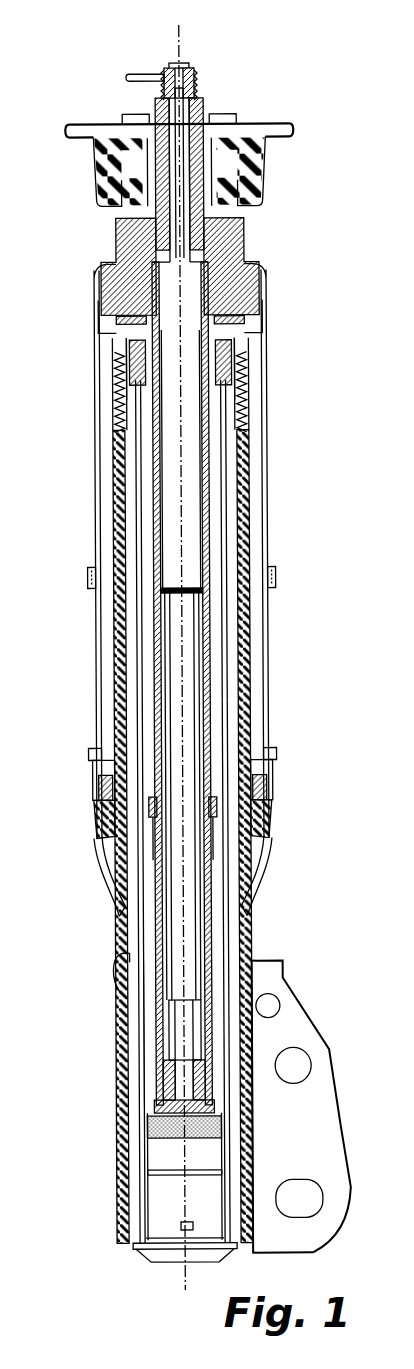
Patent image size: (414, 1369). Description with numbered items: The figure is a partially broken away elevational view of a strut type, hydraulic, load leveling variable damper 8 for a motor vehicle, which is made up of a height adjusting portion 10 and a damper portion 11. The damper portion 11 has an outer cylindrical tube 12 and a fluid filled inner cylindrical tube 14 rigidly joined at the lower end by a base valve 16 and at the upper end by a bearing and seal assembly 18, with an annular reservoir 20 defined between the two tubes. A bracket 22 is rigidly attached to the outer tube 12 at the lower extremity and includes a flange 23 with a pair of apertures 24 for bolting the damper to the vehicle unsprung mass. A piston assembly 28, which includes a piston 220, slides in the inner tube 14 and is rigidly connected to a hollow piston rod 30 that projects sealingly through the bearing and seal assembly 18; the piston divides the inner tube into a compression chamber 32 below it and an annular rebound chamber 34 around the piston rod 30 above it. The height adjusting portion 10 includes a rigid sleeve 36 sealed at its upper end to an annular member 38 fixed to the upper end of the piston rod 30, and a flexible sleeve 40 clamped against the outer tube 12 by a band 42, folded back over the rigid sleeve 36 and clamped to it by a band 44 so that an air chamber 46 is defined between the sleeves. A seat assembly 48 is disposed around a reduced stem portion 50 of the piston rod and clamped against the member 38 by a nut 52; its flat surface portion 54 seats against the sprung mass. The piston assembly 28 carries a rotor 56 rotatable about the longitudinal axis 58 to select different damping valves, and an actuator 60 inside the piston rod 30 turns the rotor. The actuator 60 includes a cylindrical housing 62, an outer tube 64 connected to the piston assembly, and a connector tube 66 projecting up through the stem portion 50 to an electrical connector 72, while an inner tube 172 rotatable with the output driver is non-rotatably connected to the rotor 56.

The variable damper 8 is at (87, 525).
The height adjusting portion 10 is at (276, 444).
The damper portion 11 is at (108, 912).
The outer cylindrical tube 12 is at (256, 912).
The inner cylindrical tube 14 is at (233, 951).
The base valve 16 is at (168, 1258).
The bearing and seal assembly 18 is at (140, 372).
The annular reservoir 20 is at (140, 1066).
The bracket 22 is at (331, 1097).
The flange 23 is at (305, 1158).
The apertures 24 is at (297, 1052).
The piston assembly 28 is at (150, 1155).
The hollow piston rod 30 is at (157, 640).
The compression chamber 32 is at (163, 1201).
The annular rebound chamber 34 is at (148, 982).
The rigid sleeve 36 is at (272, 525).
The annular member 38 is at (222, 226).
The flexible sleeve 40 is at (102, 842).
The band 42 is at (242, 434).
The band 44 is at (100, 790).
The air chamber 46 is at (258, 616).
The seat assembly 48 is at (284, 118).
The reduced stem portion 50 is at (206, 145).
The nut 52 is at (198, 106).
The flat surface portion 54 is at (97, 125).
The rotor 56 is at (177, 1094).
The longitudinal axis 58 is at (183, 663).
The actuator 60 is at (156, 413).
The cylindrical housing 62 is at (172, 453).
The outer tube 64 is at (177, 947).
The connector tube 66 is at (172, 203).
The electrical connector 72 is at (183, 62).
The inner tube 172 is at (187, 1048).
The piston 220 is at (236, 1146).